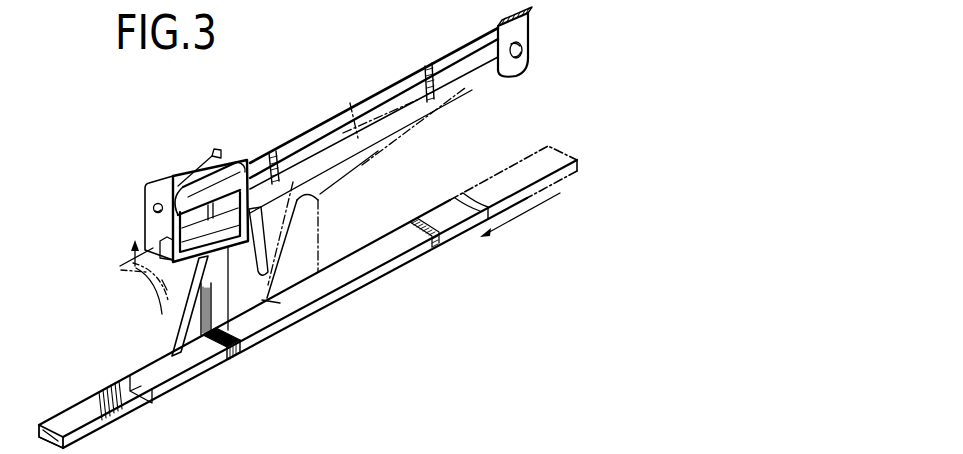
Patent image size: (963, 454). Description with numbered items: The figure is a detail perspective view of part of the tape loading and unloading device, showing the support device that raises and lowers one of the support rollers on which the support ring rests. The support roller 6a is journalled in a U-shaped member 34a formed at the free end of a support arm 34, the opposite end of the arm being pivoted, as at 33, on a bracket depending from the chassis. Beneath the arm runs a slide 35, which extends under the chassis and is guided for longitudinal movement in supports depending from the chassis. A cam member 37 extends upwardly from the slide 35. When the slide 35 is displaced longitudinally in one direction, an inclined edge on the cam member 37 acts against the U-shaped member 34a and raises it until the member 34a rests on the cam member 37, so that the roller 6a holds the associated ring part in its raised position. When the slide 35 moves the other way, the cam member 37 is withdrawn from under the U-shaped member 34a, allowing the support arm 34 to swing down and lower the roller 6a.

The support roller 6a is at (184, 179).
The pivot 33 is at (523, 56).
The support arm 34 is at (346, 129).
The U-shaped member 34a is at (121, 277).
The slide 35 is at (374, 262).
The cam member 37 is at (217, 321).